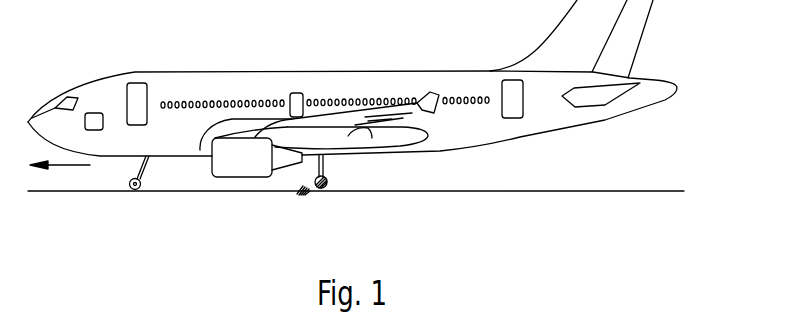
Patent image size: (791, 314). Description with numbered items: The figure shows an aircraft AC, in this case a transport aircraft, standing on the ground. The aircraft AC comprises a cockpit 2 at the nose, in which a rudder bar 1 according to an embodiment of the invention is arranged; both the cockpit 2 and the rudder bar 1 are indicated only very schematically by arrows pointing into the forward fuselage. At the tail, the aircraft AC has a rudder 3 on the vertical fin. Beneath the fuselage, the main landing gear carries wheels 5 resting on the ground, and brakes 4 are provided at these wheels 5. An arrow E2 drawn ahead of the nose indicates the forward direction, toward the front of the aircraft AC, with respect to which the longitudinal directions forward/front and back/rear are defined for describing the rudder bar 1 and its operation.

The rudder bar 1 is at (95, 112).
The cockpit 2 is at (88, 103).
The rudder 3 is at (633, 18).
The brakes 4 is at (300, 192).
The wheels 5 is at (323, 188).
The aircraft AC is at (492, 142).
The arrow E2 is at (72, 166).